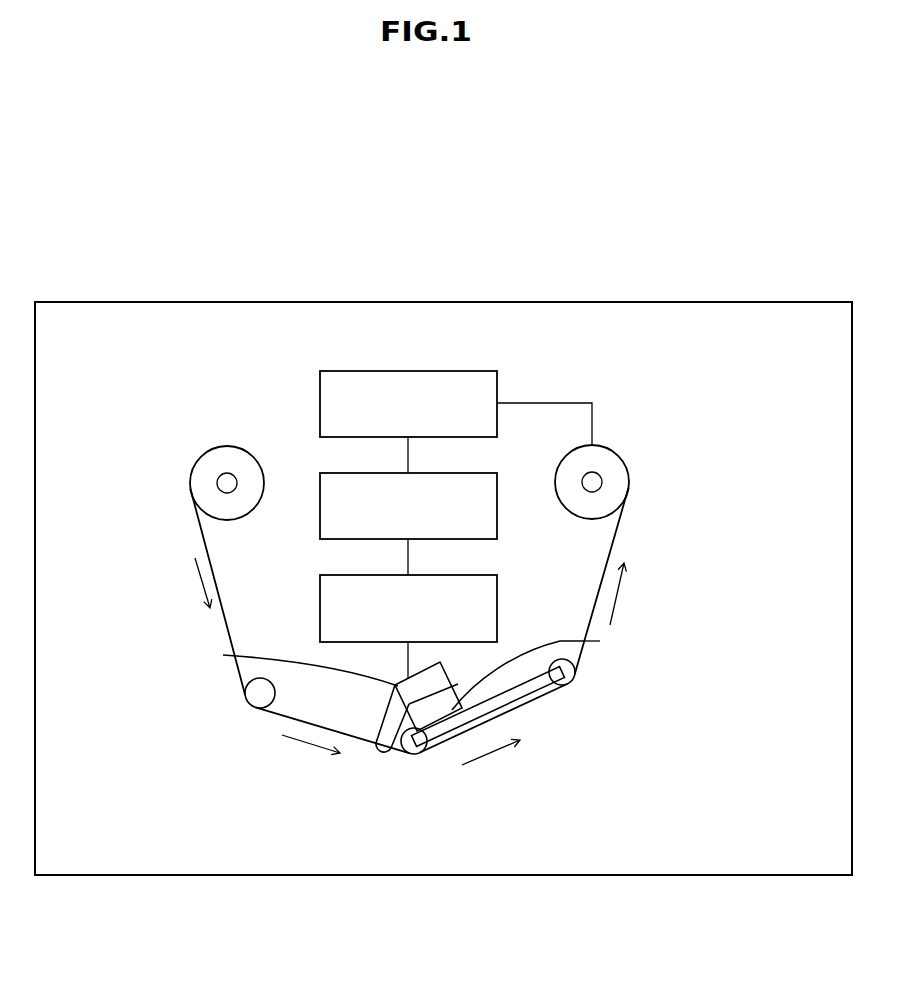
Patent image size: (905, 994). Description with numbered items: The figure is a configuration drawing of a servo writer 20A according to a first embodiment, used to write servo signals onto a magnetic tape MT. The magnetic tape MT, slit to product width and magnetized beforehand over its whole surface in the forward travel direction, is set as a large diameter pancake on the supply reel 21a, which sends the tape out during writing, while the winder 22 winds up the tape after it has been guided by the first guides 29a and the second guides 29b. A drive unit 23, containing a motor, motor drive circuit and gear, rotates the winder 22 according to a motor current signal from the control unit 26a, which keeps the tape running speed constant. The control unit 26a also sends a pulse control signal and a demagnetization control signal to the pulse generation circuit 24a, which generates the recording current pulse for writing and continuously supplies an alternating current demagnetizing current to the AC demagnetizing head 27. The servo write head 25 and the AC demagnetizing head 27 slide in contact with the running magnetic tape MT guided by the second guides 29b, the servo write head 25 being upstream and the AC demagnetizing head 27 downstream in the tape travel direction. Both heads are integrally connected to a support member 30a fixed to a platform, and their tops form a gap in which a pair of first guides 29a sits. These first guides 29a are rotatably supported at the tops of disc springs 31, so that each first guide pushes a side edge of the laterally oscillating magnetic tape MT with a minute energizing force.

The servo writer 20A is at (819, 351).
The supply reel 21a is at (205, 452).
The winder 22 is at (612, 447).
The drive unit 23 is at (440, 371).
The pulse generation circuit 24a is at (497, 612).
The servo write head 25 is at (378, 742).
The control unit 26a is at (497, 505).
The AC demagnetizing head 27 is at (598, 641).
The first guides 29a is at (410, 757).
The second guides 29b is at (251, 708).
The support member 30a is at (236, 656).
The disc springs 31 is at (534, 692).
The magnetic tape MT is at (197, 530).